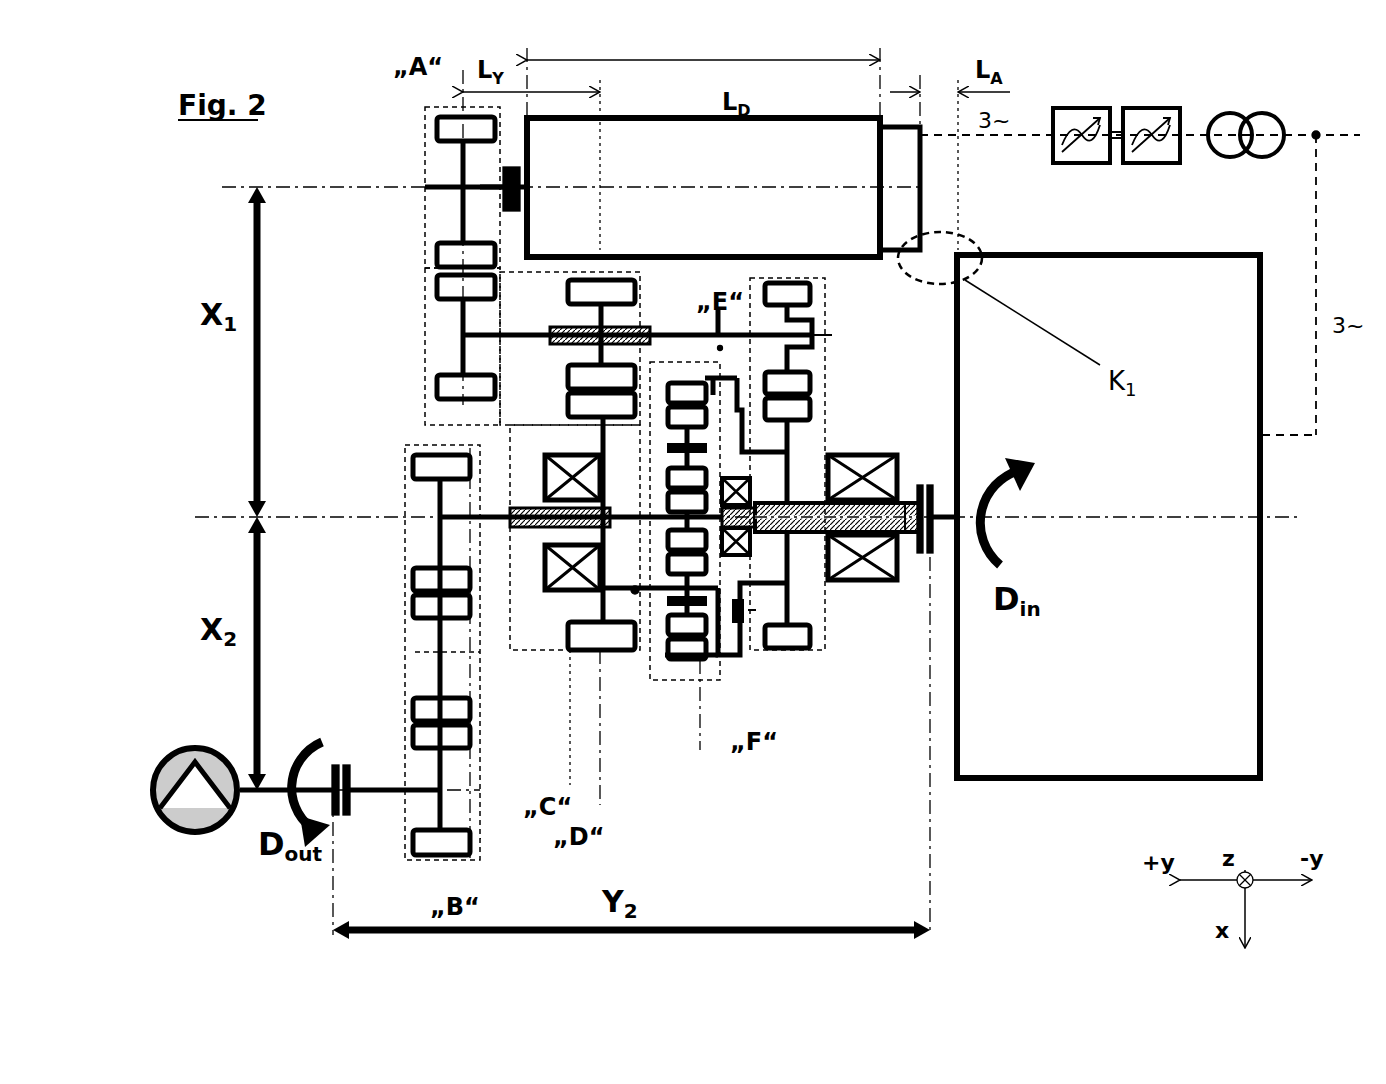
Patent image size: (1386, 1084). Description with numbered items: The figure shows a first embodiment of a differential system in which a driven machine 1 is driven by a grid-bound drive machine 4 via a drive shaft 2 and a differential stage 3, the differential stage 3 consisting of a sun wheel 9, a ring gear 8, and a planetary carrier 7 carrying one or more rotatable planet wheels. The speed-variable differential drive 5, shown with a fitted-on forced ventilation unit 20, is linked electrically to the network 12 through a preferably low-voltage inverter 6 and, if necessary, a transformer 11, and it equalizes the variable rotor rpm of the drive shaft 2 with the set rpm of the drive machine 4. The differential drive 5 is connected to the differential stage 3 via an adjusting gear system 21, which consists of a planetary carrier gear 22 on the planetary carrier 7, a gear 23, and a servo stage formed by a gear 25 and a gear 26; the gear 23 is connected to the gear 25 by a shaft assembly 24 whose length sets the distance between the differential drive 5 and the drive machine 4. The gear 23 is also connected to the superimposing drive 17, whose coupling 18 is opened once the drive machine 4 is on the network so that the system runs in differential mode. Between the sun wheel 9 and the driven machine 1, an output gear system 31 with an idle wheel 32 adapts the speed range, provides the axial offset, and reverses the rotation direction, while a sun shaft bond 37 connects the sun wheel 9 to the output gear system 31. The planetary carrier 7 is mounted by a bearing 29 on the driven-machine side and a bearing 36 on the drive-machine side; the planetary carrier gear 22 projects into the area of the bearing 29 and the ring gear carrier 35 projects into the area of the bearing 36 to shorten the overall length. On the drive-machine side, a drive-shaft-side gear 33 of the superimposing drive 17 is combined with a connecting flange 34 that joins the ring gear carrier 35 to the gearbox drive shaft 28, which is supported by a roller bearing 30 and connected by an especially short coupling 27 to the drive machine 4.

The driven machine 1 is at (196, 832).
The drive shaft 2 is at (398, 792).
The differential stage 3 is at (667, 684).
The drive machine 4 is at (1078, 777).
The differential drive 5 is at (880, 187).
The inverter 6 is at (1118, 168).
The planetary carrier 7 is at (636, 594).
The ring gear 8 is at (690, 662).
The sun wheel 9 is at (722, 622).
The transformer 11 is at (1232, 157).
The network 12 is at (1314, 140).
The superimposing drive 17 is at (828, 368).
The coupling 18 is at (815, 335).
The forced ventilation unit 20 is at (922, 150).
The adjusting gear system 21 is at (395, 191).
The planetary carrier gear 22 is at (568, 405).
The gear 23 is at (566, 378).
The shaft assembly 24 is at (495, 340).
The gear 25 is at (437, 289).
The gear 26 is at (437, 250).
The coupling 27 is at (930, 556).
The gearbox drive shaft 28 is at (905, 536).
The bearing 29 is at (560, 594).
The bearing 30 is at (862, 584).
The output gear system 31 is at (484, 840).
The idle wheel 32 is at (440, 652).
The drive-shaft-side gear 33 is at (787, 642).
The connecting flange 34 is at (787, 548).
The ring gear carrier 35 is at (742, 657).
The bearing 36 is at (742, 490).
The sun shaft bond 37 is at (530, 530).